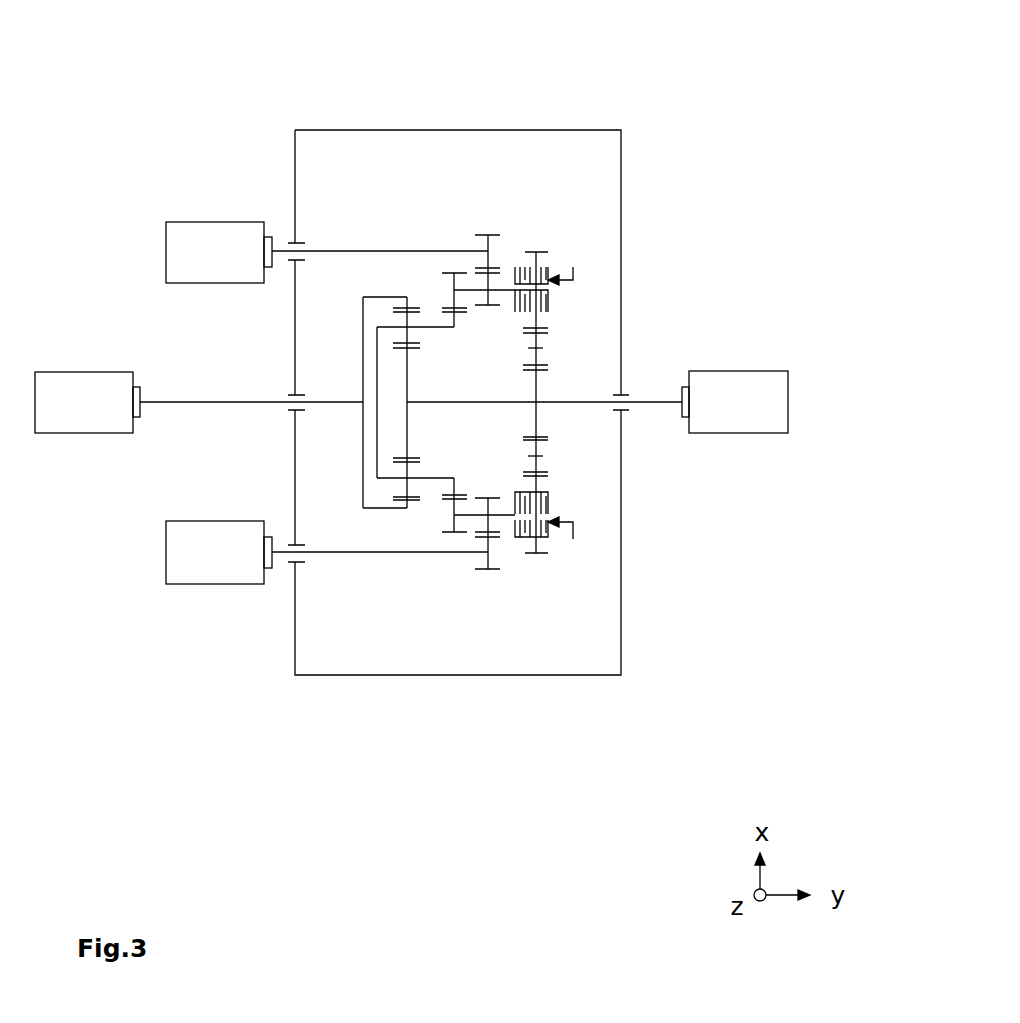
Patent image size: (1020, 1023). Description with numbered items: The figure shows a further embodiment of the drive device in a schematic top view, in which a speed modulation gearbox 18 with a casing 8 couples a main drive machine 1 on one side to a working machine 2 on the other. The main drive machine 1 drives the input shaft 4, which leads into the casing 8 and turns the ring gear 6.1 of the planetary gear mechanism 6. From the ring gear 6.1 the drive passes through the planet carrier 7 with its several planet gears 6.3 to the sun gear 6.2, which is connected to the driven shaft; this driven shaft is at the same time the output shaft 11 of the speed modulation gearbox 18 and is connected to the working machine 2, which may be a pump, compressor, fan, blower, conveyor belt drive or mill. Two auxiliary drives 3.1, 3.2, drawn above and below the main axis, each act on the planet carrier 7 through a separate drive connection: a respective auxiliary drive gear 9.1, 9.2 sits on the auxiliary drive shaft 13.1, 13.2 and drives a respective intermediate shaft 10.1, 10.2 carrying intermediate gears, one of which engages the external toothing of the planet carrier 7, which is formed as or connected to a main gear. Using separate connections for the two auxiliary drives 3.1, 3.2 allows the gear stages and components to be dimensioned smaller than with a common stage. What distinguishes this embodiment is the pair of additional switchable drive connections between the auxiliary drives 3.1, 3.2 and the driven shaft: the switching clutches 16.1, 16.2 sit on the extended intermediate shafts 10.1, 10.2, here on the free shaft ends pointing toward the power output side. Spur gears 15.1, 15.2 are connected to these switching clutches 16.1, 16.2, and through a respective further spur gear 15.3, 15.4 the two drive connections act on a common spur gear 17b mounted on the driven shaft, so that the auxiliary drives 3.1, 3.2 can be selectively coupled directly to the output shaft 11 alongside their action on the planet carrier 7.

The main drive machine 1 is at (92, 372).
The working machine 2 is at (758, 371).
The auxiliary drive 3.1 is at (210, 222).
The auxiliary drive 3.2 is at (195, 585).
The input shaft 4 is at (165, 400).
The planetary gear mechanism 6 is at (352, 350).
The ring gear 6.1 is at (362, 393).
The sun gear 6.2 is at (405, 427).
The planet gears 6.3 is at (405, 485).
The planet carrier 7 is at (430, 320).
The casing 8 is at (556, 130).
The auxiliary drive gear 9.1 is at (490, 247).
The auxiliary drive gear 9.2 is at (493, 560).
The intermediate shaft 10.1 is at (473, 287).
The intermediate shaft 10.2 is at (470, 555).
The output shaft 11 is at (665, 398).
The auxiliary drive shaft 13.1 is at (373, 250).
The auxiliary drive shaft 13.2 is at (407, 555).
The spur gear 15.1 is at (530, 253).
The spur gear 15.2 is at (545, 545).
The further spur gear 15.3 is at (545, 355).
The further spur gear 15.4 is at (545, 458).
The switching clutch 16.1 is at (552, 293).
The switching clutch 16.2 is at (555, 520).
The common spur gear 17b is at (542, 422).
The speed modulation gearbox 18 is at (650, 611).